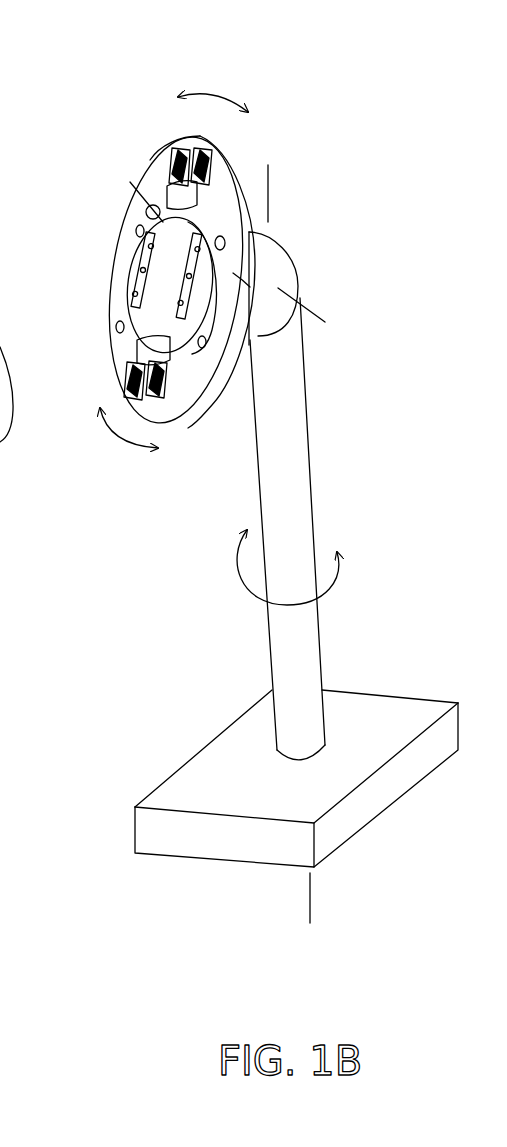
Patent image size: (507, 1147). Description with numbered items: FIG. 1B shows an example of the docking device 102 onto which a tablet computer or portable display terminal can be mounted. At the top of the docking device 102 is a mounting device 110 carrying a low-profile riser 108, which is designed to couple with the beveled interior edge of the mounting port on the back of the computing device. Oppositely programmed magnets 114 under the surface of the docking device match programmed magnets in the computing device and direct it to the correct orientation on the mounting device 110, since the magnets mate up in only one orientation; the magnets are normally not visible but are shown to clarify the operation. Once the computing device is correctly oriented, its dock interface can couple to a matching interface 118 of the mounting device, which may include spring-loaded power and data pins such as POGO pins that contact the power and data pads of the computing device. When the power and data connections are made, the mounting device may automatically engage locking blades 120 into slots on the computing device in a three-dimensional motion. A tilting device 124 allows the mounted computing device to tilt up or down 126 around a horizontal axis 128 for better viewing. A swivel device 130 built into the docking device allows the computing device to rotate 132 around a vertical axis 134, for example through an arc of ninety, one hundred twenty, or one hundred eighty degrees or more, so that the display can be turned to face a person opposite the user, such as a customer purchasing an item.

The docking device 102 is at (393, 918).
The low-profile riser 108 is at (153, 212).
The mounting device 110 is at (182, 135).
The oppositely programmed magnets 114 is at (212, 142).
The matching interface 118 is at (132, 232).
The locking blades 120 is at (205, 190).
The tilting device 124 is at (296, 272).
The tilt up or down 126 is at (122, 440).
The horizontal axis 128 is at (218, 93).
The swivel device 130 is at (318, 667).
The rotate 132 is at (330, 593).
The vertical axis 134 is at (268, 205).